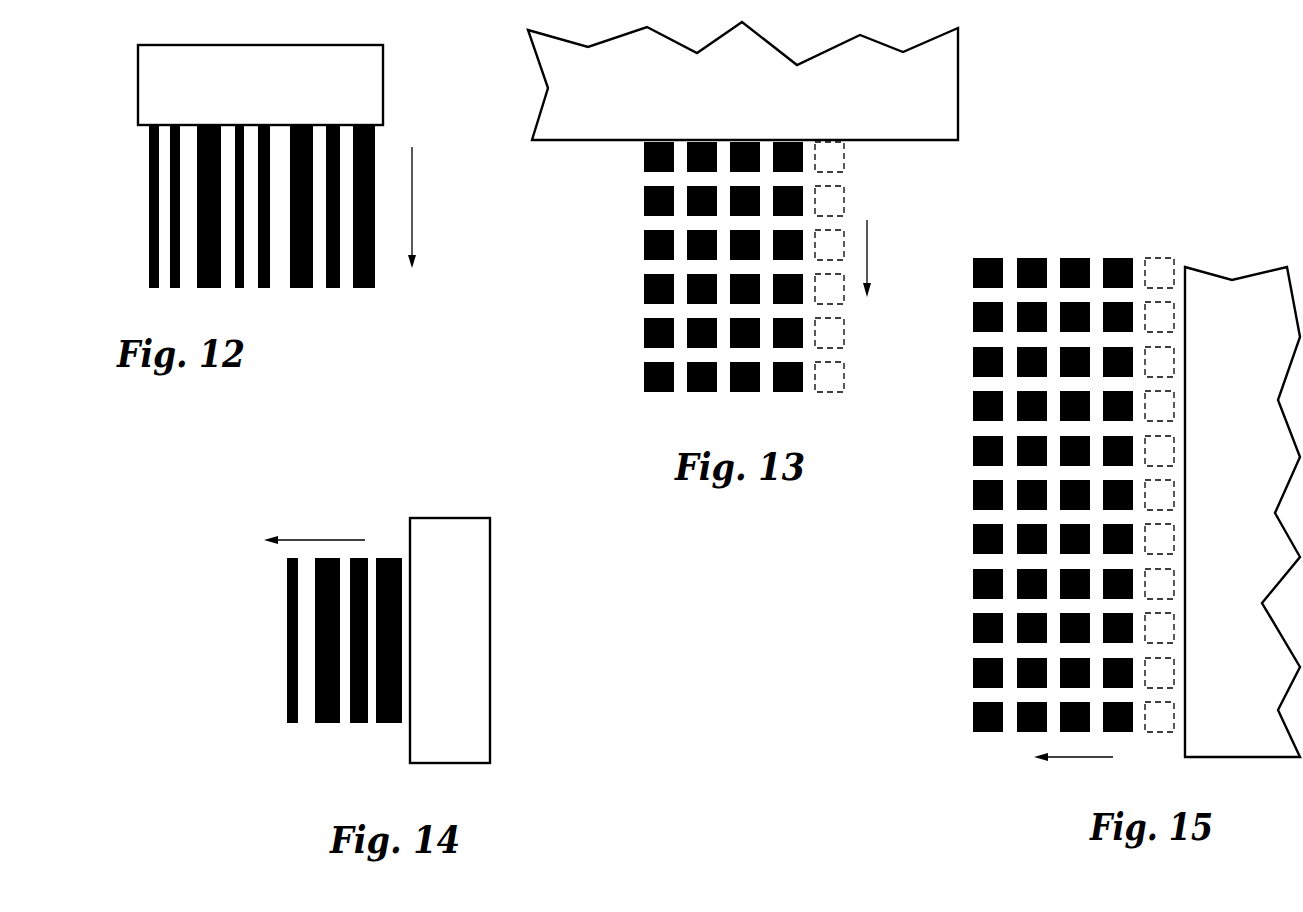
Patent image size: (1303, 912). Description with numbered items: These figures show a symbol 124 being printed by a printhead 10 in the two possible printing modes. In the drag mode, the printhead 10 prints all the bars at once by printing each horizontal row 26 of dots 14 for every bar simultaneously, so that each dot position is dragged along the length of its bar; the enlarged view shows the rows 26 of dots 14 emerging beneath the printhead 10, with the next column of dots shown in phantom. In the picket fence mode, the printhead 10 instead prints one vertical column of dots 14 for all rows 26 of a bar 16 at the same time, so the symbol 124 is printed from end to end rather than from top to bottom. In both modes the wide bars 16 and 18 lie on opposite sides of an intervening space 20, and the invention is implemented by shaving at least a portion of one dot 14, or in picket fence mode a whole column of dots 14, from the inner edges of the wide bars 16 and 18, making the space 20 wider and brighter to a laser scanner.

In FIG. 12, the printhead 10 is at (378, 88).
In FIG. 13, the printhead 10 is at (950, 72).
In FIG. 14, the printhead 10 is at (481, 558).
In FIG. 15, the printhead 10 is at (1237, 293).
In FIG. 13, the dot 14 is at (745, 392).
In FIG. 15, the dot 14 is at (976, 675).
In FIG. 12, the wide bar 16 is at (323, 278).
In FIG. 13, the wide bar 16 is at (643, 327).
In FIG. 14, the wide bar 16 is at (355, 724).
In FIG. 15, the wide bar 16 is at (1033, 258).
In FIG. 12, the wide bar 18 is at (375, 202).
In FIG. 14, the wide bar 18 is at (392, 726).
In FIG. 12, the intervening space 20 is at (345, 280).
In FIG. 14, the intervening space 20 is at (370, 559).
In FIG. 13, the horizontal row of dots 26 is at (624, 288).
In FIG. 15, the horizontal row of dots 26 is at (959, 407).
In FIG. 12, the symbol 124 is at (389, 258).
In FIG. 13, the symbol 124 is at (592, 220).
In FIG. 14, the symbol 124 is at (262, 637).
In FIG. 15, the symbol 124 is at (953, 483).